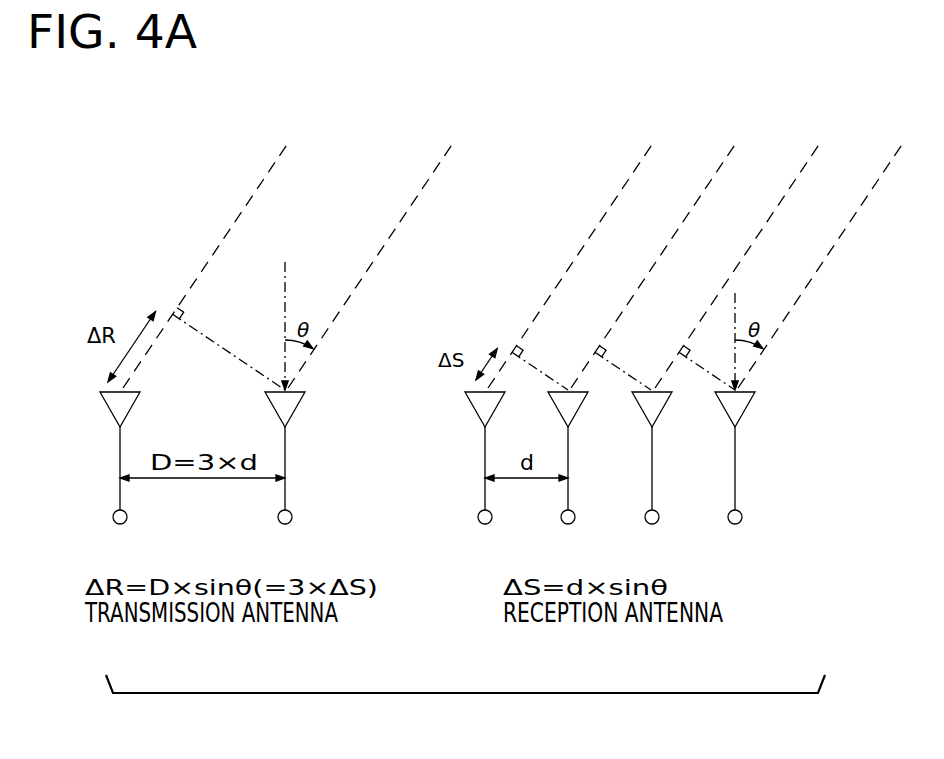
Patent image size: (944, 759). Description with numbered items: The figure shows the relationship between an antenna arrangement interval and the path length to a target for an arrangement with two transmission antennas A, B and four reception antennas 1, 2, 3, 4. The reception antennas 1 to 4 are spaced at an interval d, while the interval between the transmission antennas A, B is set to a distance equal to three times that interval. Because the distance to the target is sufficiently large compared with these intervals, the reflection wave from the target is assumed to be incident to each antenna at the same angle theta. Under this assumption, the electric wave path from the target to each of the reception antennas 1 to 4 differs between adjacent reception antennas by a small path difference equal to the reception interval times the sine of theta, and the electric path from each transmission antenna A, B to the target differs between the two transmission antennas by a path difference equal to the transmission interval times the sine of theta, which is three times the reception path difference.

The transmission antenna A is at (120, 476).
The transmission antenna B is at (285, 476).
The reception antenna 1 is at (485, 476).
The reception antenna 2 is at (568, 476).
The reception antenna 3 is at (652, 476).
The reception antenna 4 is at (735, 476).